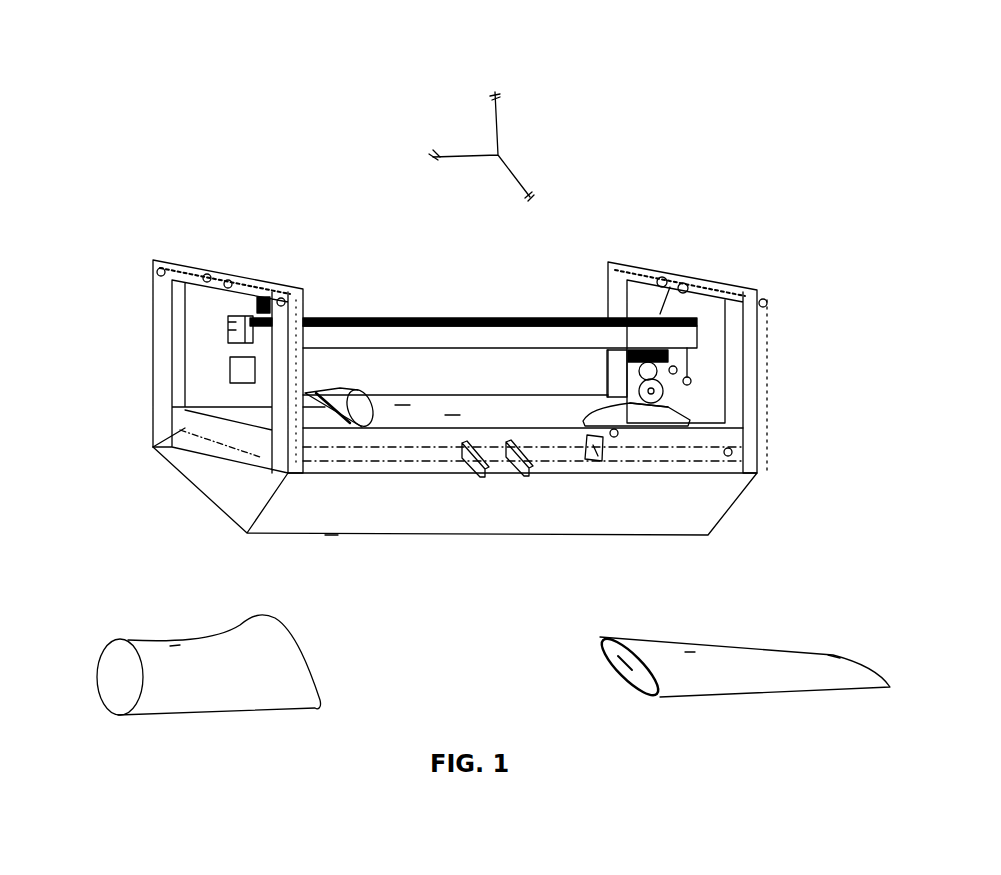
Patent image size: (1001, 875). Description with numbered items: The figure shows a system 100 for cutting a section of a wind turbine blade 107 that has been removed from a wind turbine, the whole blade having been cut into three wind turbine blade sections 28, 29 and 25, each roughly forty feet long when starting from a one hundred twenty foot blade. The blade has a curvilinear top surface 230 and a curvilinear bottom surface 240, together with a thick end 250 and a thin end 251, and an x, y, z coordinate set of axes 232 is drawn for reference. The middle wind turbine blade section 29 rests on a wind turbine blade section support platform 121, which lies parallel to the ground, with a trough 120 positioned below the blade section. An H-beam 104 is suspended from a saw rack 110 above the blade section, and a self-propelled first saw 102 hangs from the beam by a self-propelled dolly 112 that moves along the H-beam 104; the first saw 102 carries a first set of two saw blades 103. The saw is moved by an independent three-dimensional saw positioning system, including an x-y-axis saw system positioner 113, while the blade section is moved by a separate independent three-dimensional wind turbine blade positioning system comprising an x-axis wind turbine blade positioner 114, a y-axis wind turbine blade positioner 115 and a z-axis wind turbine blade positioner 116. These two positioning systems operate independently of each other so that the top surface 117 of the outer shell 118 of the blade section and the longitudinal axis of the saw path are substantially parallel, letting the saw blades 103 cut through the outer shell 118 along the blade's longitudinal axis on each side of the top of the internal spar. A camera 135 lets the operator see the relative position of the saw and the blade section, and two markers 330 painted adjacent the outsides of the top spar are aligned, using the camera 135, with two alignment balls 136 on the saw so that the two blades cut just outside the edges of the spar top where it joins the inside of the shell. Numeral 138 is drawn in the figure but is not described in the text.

The system 100 is at (645, 155).
The first saw 102 is at (643, 350).
The first set of two saw blades 103 is at (668, 400).
The H-beam 104 is at (323, 316).
The wind turbine blade 107 is at (829, 560).
The saw rack 110 is at (157, 320).
The self-propelled dolly 112 is at (605, 350).
The x-y-axis saw system positioner 113 is at (218, 275).
The x-axis wind turbine blade positioner 114 is at (462, 458).
The y-axis wind turbine blade positioner 115 is at (512, 465).
The z-axis wind turbine blade positioner 116 is at (598, 458).
The top surface 117 is at (453, 413).
The outer shell 118 is at (375, 430).
The trough 120 is at (193, 483).
The wind turbine blade section support platform 121 is at (153, 447).
The camera 135 is at (233, 372).
The alignment balls 136 is at (690, 358).
The guide rail 138 is at (350, 392).
The wind turbine blade section 29 is at (494, 413).
The curvilinear top surface 230 is at (403, 403).
The x, y, z coordinate set of axes 232 is at (473, 133).
The curvilinear bottom surface 240 is at (330, 540).
The markers 330 is at (640, 403).
The wind turbine blade section 28 is at (222, 693).
The wind turbine blade section 25 is at (740, 678).
The thick end 250 is at (648, 645).
The thin end 251 is at (833, 660).